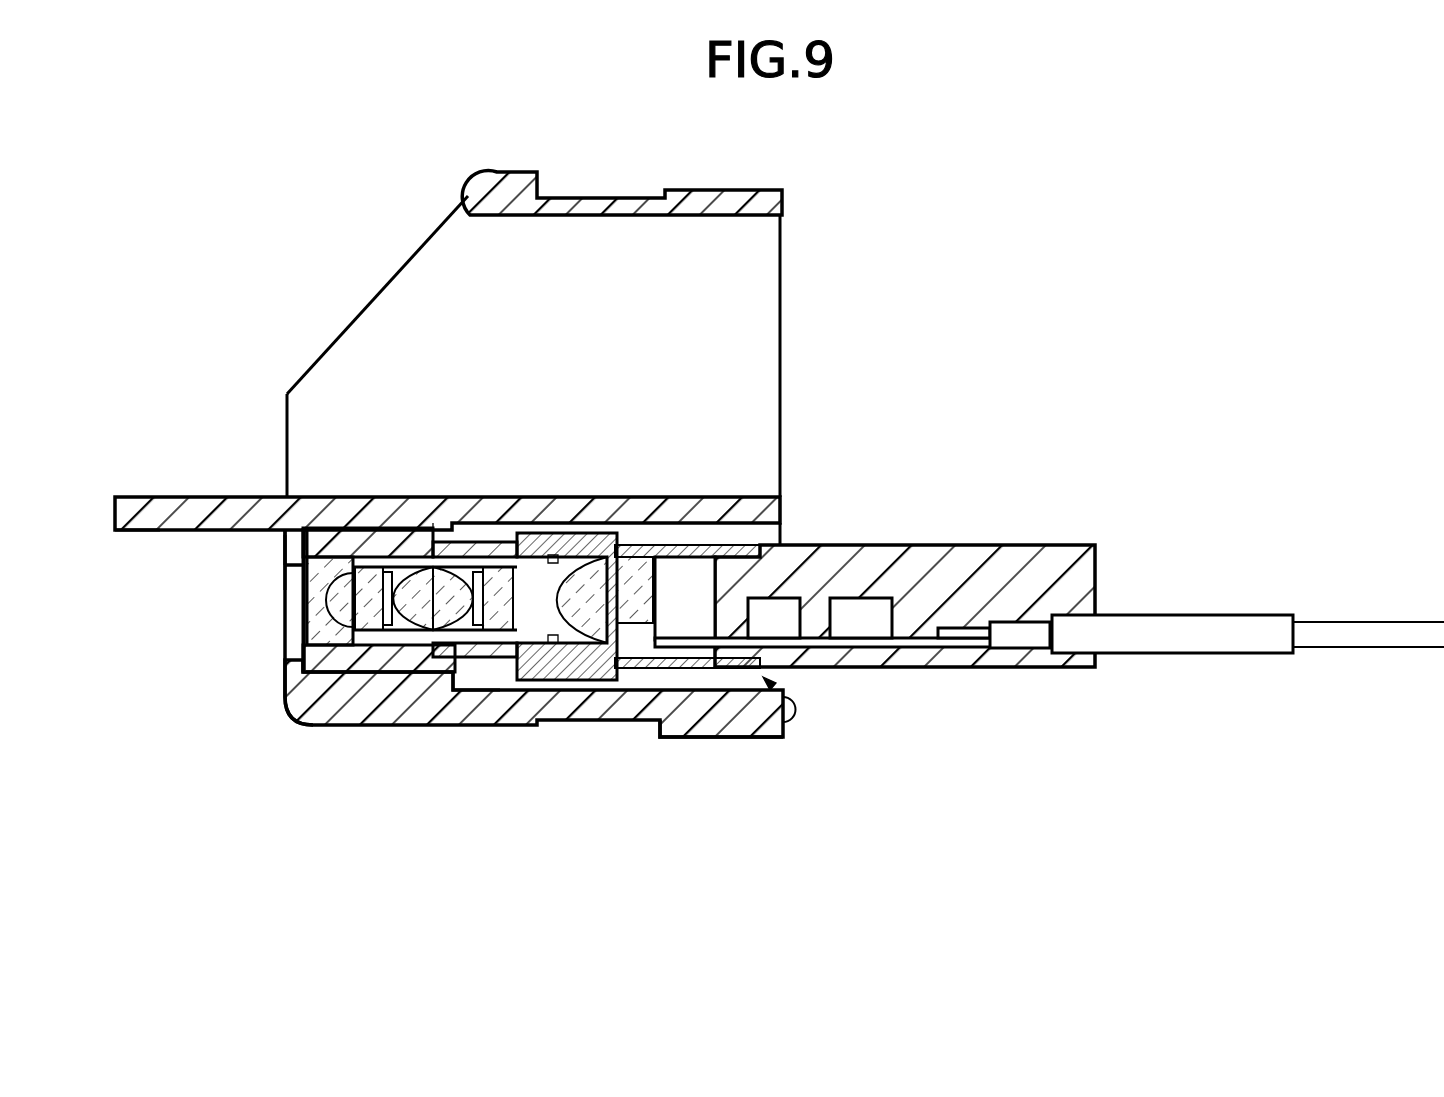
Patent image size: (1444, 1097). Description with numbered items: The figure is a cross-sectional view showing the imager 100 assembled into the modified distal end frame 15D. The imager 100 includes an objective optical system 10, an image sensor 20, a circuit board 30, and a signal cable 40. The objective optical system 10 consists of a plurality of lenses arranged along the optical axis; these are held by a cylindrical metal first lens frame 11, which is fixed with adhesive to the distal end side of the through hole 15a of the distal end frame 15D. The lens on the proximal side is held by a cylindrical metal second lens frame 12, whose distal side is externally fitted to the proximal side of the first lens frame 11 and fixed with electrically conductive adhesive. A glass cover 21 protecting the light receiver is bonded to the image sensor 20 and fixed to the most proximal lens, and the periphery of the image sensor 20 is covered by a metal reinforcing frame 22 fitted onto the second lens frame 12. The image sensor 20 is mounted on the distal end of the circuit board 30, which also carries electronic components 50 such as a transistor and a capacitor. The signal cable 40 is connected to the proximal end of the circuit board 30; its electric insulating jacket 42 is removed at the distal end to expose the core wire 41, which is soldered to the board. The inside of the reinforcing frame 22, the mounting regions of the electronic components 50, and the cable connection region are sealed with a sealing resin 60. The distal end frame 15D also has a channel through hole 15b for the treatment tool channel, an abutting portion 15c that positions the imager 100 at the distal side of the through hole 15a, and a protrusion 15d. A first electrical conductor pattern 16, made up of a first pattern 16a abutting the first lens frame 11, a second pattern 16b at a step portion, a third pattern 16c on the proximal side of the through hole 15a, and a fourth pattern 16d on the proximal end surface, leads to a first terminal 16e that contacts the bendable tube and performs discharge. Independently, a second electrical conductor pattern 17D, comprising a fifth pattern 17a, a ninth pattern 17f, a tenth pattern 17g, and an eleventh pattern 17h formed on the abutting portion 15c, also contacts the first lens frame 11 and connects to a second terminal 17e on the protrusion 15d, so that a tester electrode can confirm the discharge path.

The objective optical system 10 is at (343, 660).
The first lens frame 11 is at (318, 658).
The second lens frame 12 is at (497, 645).
The through hole 15a is at (287, 632).
The channel through hole 15b is at (468, 214).
The abutting portion 15c is at (293, 707).
The protrusion 15d is at (140, 497).
The distal end frame 15D is at (462, 222).
The first electrical conductor pattern 16 is at (375, 812).
The first pattern 16a is at (388, 690).
The second pattern 16b is at (465, 692).
The third pattern 16c is at (557, 683).
The fourth pattern 16d is at (712, 738).
The first terminal 16e is at (770, 738).
The fifth pattern 17a is at (337, 497).
The second terminal 17e is at (137, 529).
The ninth pattern 17f is at (302, 535).
The tenth pattern 17g is at (287, 545).
The eleventh pattern 17h is at (285, 565).
The second electrical conductor pattern 17D is at (318, 318).
The image sensor 20 is at (680, 625).
The glass cover 21 is at (633, 605).
The reinforcing frame 22 is at (570, 665).
The circuit board 30 is at (917, 647).
The signal cable 40 is at (1330, 654).
The core wire 41 is at (957, 634).
The electric insulating jacket 42 is at (1023, 634).
The electronic components 50 is at (852, 628).
The sealing resin 60 is at (1082, 577).
The imager 100 is at (770, 682).